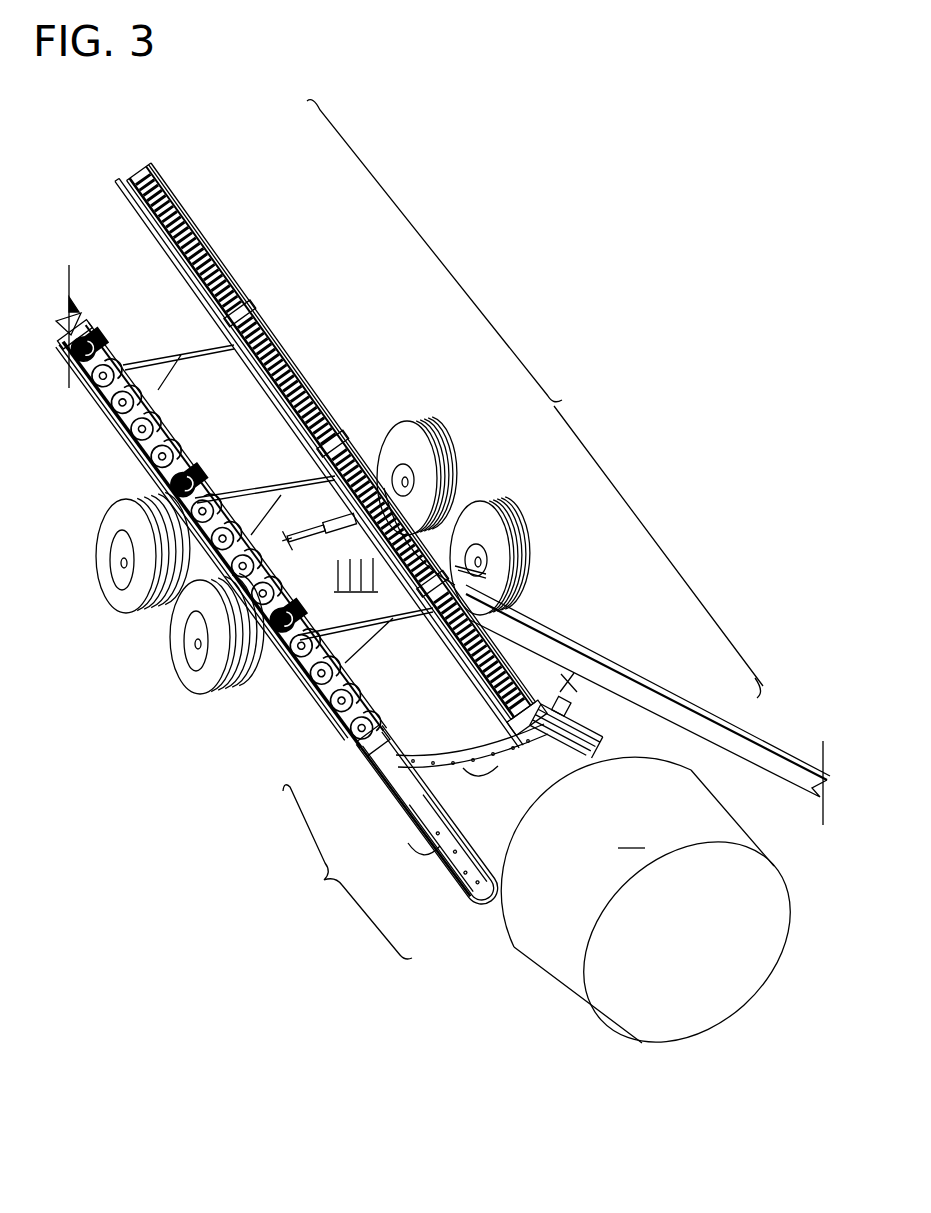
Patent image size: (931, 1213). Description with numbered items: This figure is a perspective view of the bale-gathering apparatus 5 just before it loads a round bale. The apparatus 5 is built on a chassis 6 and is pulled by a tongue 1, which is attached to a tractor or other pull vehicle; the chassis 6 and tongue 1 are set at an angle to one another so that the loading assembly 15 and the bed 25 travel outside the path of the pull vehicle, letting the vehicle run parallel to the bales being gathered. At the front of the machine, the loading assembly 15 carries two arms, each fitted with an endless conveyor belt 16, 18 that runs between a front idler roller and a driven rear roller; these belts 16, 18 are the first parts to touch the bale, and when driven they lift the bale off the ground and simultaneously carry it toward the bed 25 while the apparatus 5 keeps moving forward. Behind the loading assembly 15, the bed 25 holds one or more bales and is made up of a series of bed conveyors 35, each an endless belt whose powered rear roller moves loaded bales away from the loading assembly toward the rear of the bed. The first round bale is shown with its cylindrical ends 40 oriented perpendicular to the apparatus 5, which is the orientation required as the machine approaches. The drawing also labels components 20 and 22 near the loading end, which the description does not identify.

The tongue 1 is at (665, 681).
The apparatus for gathering round bales 5 is at (422, 399).
The chassis 6 is at (317, 400).
The loading assembly 15 is at (347, 872).
The endless conveyor belt 16 is at (428, 852).
The endless conveyor belt 18 is at (580, 742).
The pickup arm 20 is at (398, 811).
The rear cross member 22 is at (528, 747).
The bed 25 is at (535, 399).
The bed conveyor 35 is at (220, 254).
The ends of the cylindrical bale 40 is at (690, 952).